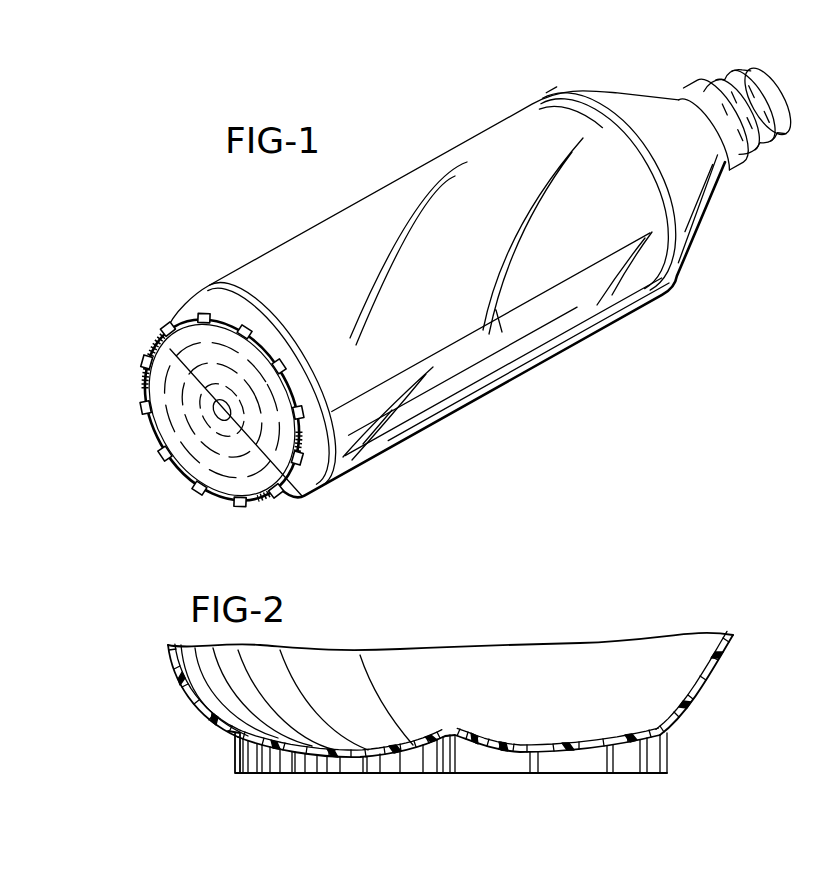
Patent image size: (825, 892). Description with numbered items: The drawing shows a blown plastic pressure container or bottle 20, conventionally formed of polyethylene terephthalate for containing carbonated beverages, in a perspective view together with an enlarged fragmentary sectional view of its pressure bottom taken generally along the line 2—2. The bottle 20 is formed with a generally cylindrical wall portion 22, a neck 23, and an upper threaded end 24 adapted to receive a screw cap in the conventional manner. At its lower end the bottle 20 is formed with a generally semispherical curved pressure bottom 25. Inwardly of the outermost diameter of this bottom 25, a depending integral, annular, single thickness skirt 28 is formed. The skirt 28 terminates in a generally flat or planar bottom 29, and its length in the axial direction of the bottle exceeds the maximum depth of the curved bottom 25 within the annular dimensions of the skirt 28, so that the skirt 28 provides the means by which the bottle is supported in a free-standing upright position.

In FIG. 1, the bottle 20 is at (536, 369).
In FIG. 2, the bottle 20 is at (507, 625).
In FIG. 1, the cylindrical wall portion 22 is at (622, 294).
In FIG. 1, the neck 23 is at (691, 211).
In FIG. 1, the upper threaded end 24 is at (766, 150).
In FIG. 1, the curved pressure bottom 25 is at (168, 420).
In FIG. 2, the curved pressure bottom 25 is at (683, 712).
In FIG. 1, the skirt 28 is at (230, 331).
In FIG. 2, the skirt 28 is at (667, 736).
In FIG. 1, the planar bottom 29 is at (192, 480).
In FIG. 2, the planar bottom 29 is at (553, 773).
In FIG. 1, the section line 2— 2 is at (133, 340).